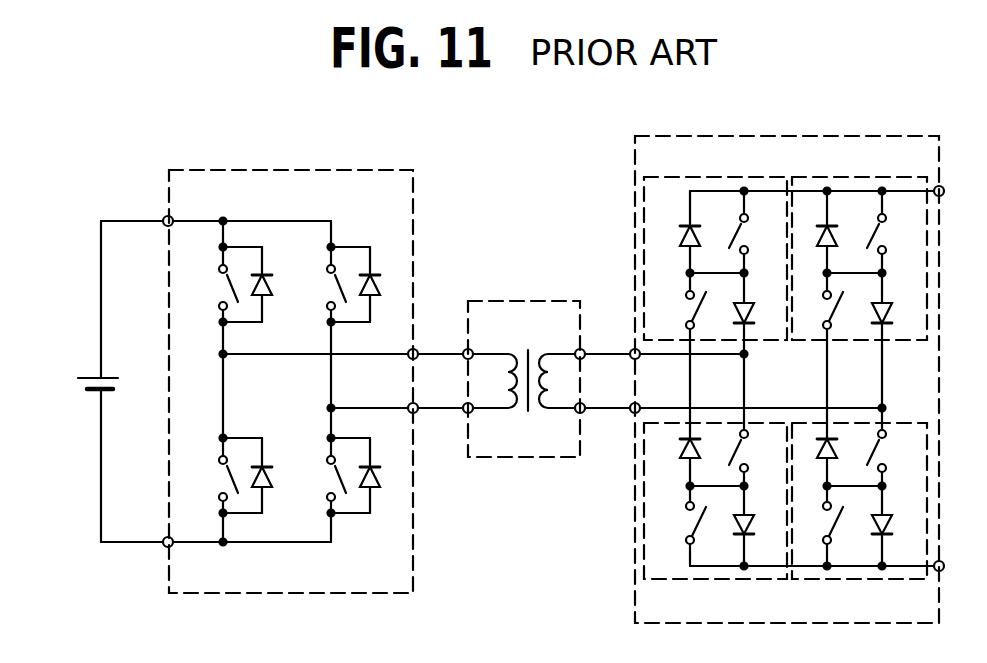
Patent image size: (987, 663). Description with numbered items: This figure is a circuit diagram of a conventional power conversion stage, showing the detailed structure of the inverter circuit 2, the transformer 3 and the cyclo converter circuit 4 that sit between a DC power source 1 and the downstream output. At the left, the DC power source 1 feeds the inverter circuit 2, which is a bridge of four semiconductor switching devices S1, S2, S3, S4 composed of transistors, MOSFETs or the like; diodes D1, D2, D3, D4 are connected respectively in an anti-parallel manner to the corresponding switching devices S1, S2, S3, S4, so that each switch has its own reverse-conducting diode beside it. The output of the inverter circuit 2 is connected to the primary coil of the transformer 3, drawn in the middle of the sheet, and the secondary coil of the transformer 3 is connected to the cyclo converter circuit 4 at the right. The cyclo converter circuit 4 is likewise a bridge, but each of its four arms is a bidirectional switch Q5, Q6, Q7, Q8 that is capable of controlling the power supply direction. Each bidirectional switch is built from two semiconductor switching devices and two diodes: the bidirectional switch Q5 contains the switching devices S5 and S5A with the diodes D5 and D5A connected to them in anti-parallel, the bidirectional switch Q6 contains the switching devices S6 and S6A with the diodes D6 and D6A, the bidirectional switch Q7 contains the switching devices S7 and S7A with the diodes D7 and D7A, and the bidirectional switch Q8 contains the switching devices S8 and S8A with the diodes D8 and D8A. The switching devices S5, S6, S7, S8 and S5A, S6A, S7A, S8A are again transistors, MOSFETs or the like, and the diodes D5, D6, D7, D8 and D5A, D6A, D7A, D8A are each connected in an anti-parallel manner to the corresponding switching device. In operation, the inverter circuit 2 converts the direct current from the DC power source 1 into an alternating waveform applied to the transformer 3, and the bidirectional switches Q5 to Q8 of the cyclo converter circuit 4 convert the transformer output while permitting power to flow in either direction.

The DC power source 1 is at (110, 377).
The inverter circuit 2 is at (396, 170).
The transformer 3 is at (518, 301).
The cyclo converter circuit 4 is at (928, 137).
The semiconductor switching device S1 is at (216, 287).
The semiconductor switching device S2 is at (214, 478).
The semiconductor switching device S3 is at (325, 287).
The semiconductor switching device S4 is at (324, 478).
The diode D1 is at (257, 285).
The diode D2 is at (256, 475).
The diode D3 is at (369, 284).
The diode D4 is at (368, 475).
The bidirectional switch Q5 is at (715, 244).
The bidirectional switch Q6 is at (715, 518).
The bidirectional switch Q7 is at (859, 244).
The bidirectional switch Q8 is at (859, 518).
The semiconductor switching device S5 is at (680, 310).
The semiconductor switching device S6 is at (680, 523).
The semiconductor switching device S7 is at (818, 310).
The semiconductor switching device S8 is at (821, 523).
The semiconductor switching device S5A is at (756, 234).
The semiconductor switching device S6A is at (753, 451).
The semiconductor switching device S7A is at (893, 234).
The semiconductor switching device S8A is at (892, 451).
The diode D5 is at (758, 312).
The diode D6 is at (757, 525).
The diode D7 is at (895, 312).
The diode D8 is at (895, 525).
The diode D5A is at (674, 224).
The diode D6A is at (673, 462).
The diode D7A is at (842, 224).
The diode D8A is at (842, 462).